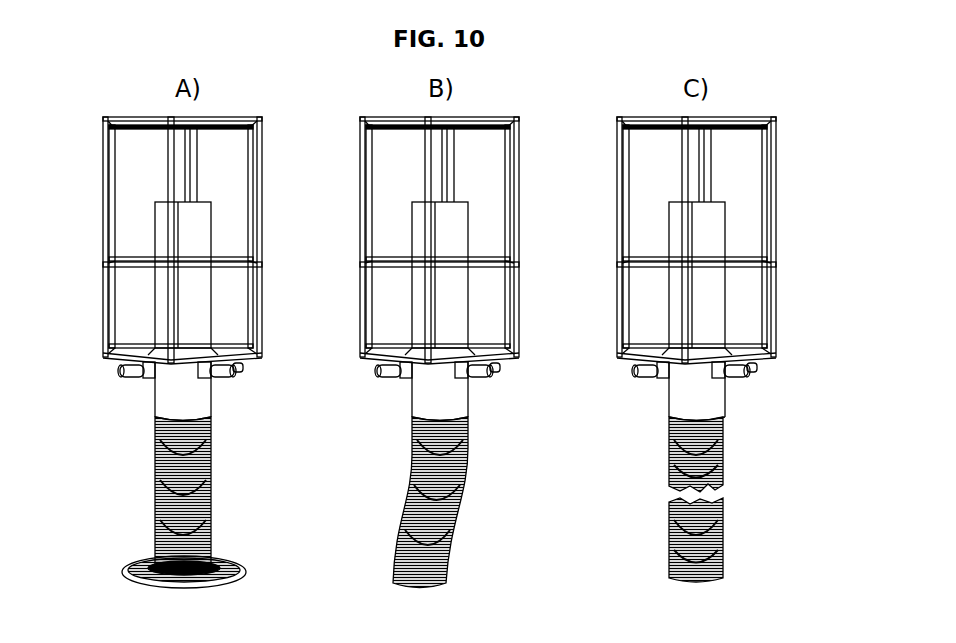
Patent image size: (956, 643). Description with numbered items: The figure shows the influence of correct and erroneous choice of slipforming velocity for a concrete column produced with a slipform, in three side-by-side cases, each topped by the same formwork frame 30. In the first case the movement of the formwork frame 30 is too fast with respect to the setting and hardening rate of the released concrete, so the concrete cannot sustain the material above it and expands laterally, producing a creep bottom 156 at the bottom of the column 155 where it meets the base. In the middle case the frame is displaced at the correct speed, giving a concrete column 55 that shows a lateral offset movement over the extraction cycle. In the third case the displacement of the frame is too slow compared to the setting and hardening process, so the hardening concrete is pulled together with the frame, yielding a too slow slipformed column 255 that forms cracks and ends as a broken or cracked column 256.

The formwork frame 30 is at (359, 166).
The flexible corrugated tube 155 is at (200, 405).
The creep bottom 156 is at (228, 553).
The concrete column 55 is at (453, 407).
The too slow slipformed column 255 is at (702, 405).
The broken or cracked column 256 is at (720, 498).